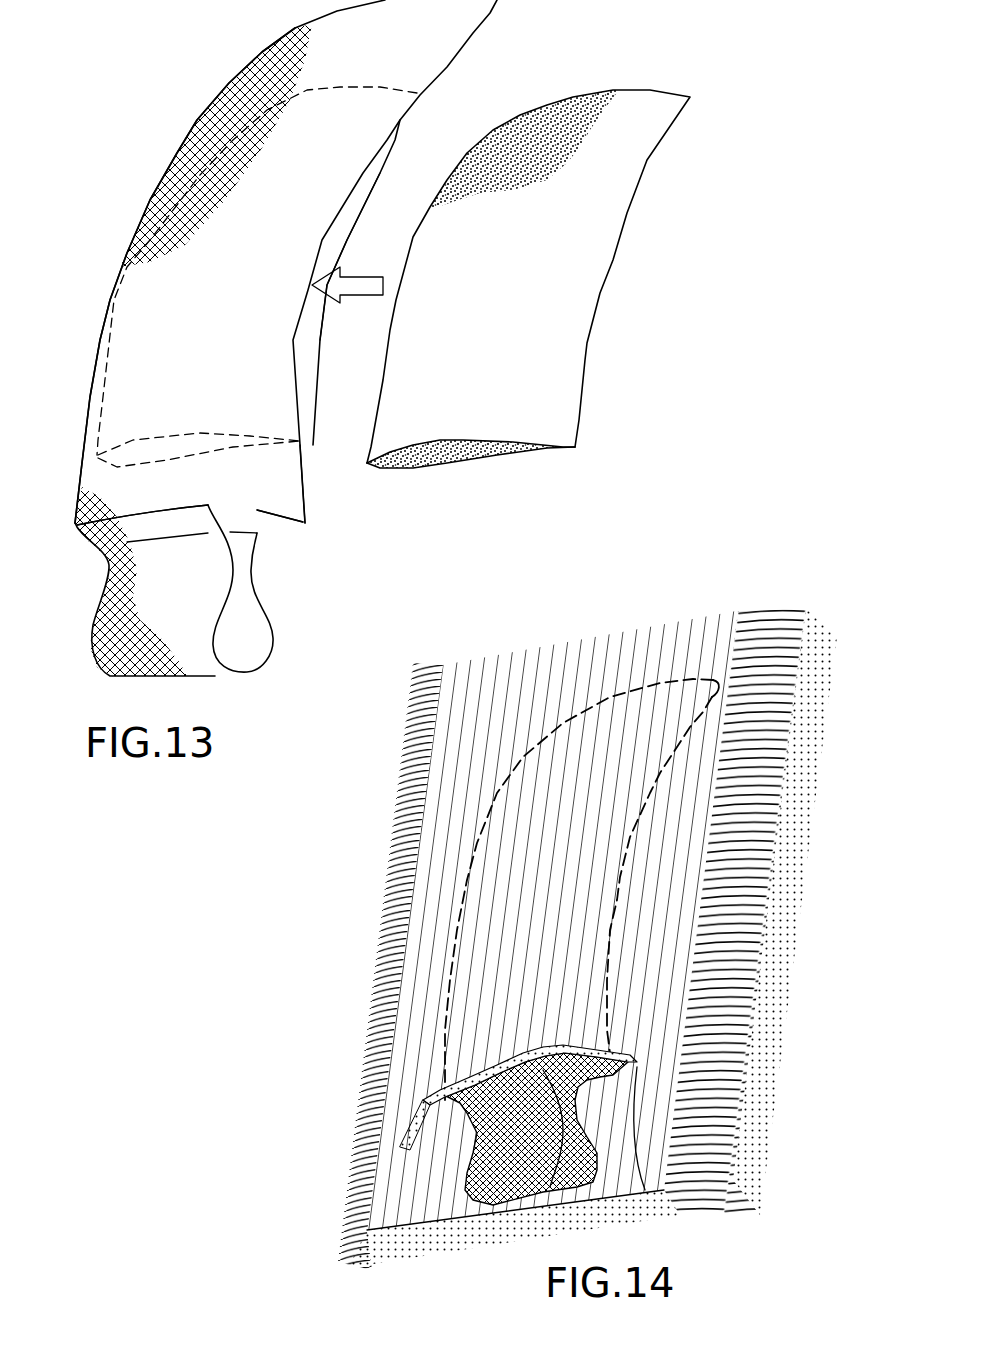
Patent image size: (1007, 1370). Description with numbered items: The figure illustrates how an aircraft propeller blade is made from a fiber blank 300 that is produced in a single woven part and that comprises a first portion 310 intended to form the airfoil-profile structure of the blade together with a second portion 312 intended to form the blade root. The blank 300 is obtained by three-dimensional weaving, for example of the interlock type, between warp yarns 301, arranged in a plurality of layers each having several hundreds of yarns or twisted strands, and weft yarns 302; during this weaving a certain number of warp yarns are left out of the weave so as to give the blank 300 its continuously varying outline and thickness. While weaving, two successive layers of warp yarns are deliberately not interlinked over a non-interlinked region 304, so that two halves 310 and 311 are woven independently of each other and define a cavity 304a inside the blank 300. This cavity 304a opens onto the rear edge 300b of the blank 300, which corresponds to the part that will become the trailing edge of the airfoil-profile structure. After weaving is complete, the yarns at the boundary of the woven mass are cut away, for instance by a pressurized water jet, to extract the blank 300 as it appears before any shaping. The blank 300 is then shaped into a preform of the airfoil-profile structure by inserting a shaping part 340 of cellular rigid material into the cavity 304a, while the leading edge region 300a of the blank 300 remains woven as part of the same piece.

In FIG. 13, the fiber blank 300 is at (204, 69).
In FIG. 14, the fiber blank 300 is at (464, 1168).
In FIG. 13, the leading edge of blade 300a is at (87, 391).
In FIG. 13, the rear edge 300b is at (305, 485).
In FIG. 14, the warp yarns 301 is at (684, 643).
In FIG. 14, the weft yarns 302 is at (745, 902).
In FIG. 13, the non-interlinked region 304 is at (112, 297).
In FIG. 13, the cavity 304a is at (293, 352).
In FIG. 13, the first portion 310 is at (340, 163).
In FIG. 14, the first portion 310 is at (510, 903).
In FIG. 13, the half 311 is at (342, 233).
In FIG. 13, the second portion 312 is at (272, 633).
In FIG. 14, the second portion 312 is at (497, 1165).
In FIG. 13, the shaping part 340 is at (575, 300).